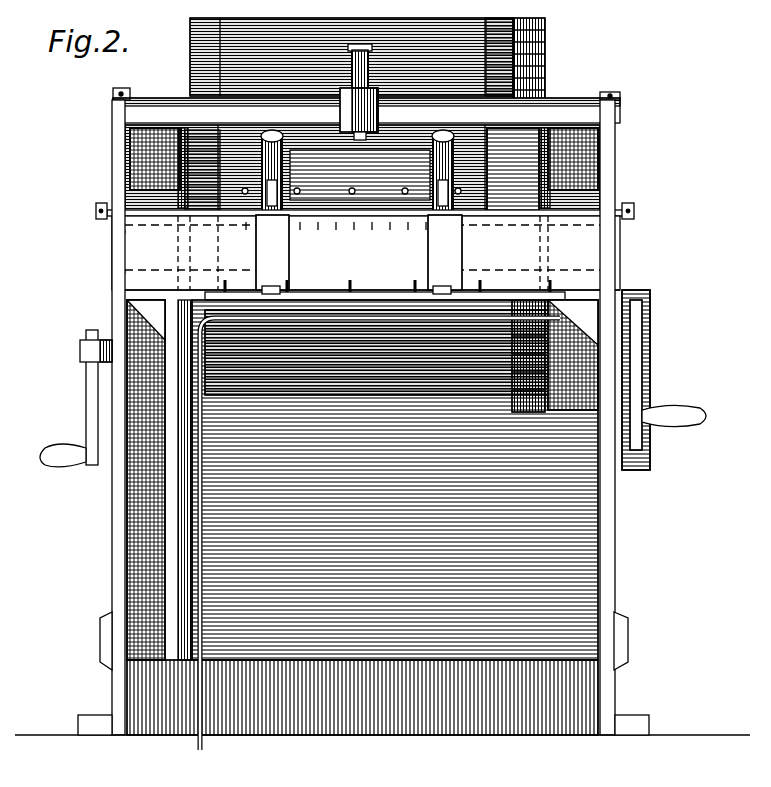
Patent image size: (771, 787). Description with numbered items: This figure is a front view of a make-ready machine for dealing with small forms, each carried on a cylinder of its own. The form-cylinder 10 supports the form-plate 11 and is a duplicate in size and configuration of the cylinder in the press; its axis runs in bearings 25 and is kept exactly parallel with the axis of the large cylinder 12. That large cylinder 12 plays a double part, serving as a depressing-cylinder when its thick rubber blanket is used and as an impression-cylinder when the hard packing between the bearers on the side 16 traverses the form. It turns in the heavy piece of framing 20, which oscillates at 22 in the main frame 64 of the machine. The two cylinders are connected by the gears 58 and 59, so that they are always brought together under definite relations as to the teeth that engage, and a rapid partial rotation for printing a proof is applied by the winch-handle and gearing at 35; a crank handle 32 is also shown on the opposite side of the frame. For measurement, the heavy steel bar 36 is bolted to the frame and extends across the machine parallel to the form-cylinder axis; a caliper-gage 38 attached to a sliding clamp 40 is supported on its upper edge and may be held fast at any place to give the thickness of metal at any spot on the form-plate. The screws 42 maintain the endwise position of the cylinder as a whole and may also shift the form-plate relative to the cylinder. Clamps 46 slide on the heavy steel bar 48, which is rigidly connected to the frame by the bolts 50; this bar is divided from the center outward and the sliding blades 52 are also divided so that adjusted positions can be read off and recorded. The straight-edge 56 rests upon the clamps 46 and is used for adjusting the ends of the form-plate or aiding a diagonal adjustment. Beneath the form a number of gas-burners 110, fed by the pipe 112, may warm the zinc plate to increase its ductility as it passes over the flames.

The form-cylinder 10 is at (368, 197).
The form-plate 11 is at (362, 170).
The large cylinder 12 is at (351, 57).
The hard packing side 16 is at (495, 62).
The oscillating piece of framing 20 is at (395, 480).
The oscillation pivot 22 is at (629, 638).
The bearings 25 is at (590, 206).
The crank 32 is at (90, 418).
The winch-handle and gearing 35 is at (550, 296).
The heavy steel bar 36 is at (140, 110).
The caliper-gage 38 is at (370, 70).
The sliding clamp 40 is at (353, 102).
The screws 42 is at (100, 208).
The clamps 46 is at (255, 256).
The heavy steel bar 48 is at (336, 243).
The bolts 50 is at (116, 234).
The sliding blades 52 is at (268, 162).
The straight-edge 56 is at (378, 200).
The gear 58 is at (535, 190).
The gear 59 is at (546, 80).
The main frame 64 is at (628, 572).
The gas-burners 110 is at (365, 292).
The pipe 112 is at (302, 312).